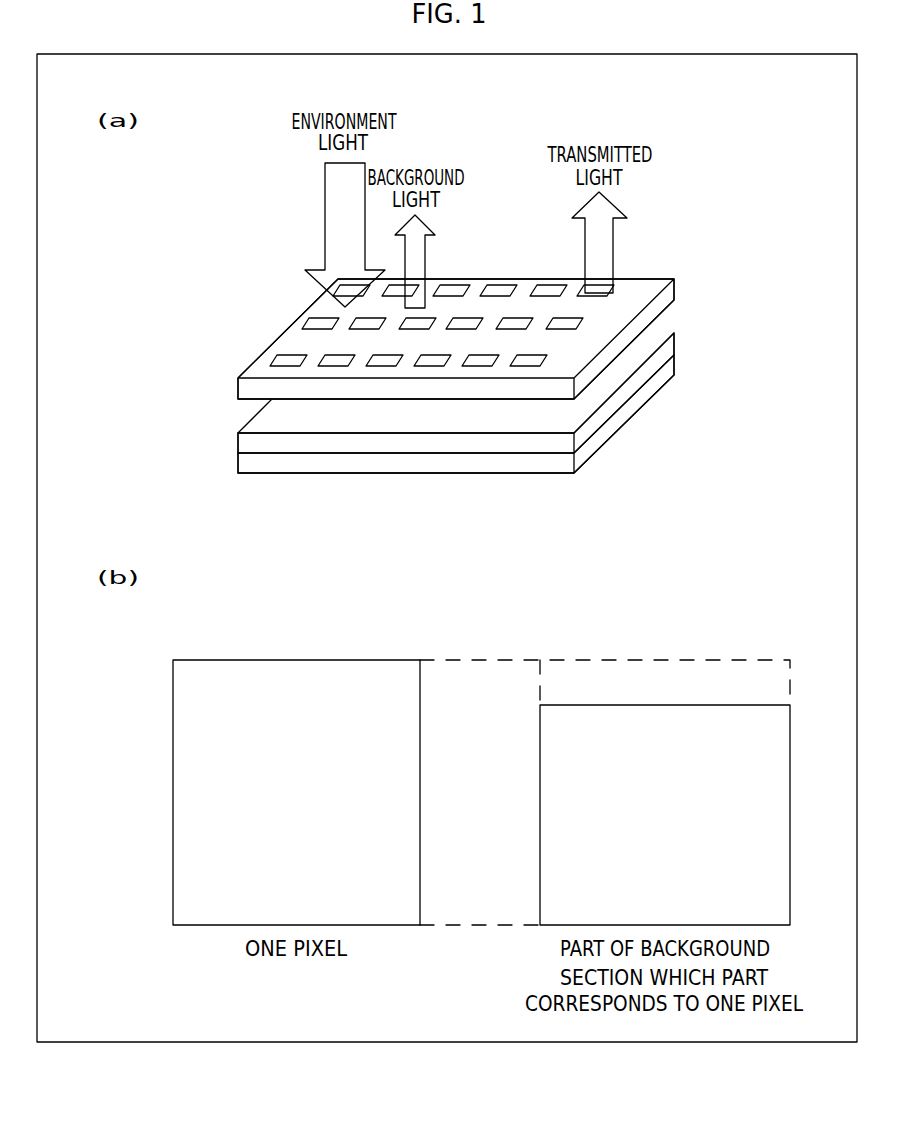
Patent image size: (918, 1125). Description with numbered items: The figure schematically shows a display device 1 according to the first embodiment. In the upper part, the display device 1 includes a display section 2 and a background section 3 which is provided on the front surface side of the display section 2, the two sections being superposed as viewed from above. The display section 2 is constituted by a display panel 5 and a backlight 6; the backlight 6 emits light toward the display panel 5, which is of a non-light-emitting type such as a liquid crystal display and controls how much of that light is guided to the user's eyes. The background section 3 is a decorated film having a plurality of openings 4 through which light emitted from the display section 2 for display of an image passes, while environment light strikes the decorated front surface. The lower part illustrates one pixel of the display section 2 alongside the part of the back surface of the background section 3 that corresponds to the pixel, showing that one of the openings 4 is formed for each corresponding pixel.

The display device 1 is at (679, 184).
The display section 2 is at (445, 626).
The background section 3 is at (676, 290).
The openings 4 is at (547, 288).
The display panel 5 is at (676, 341).
The backlight 6 is at (676, 378).